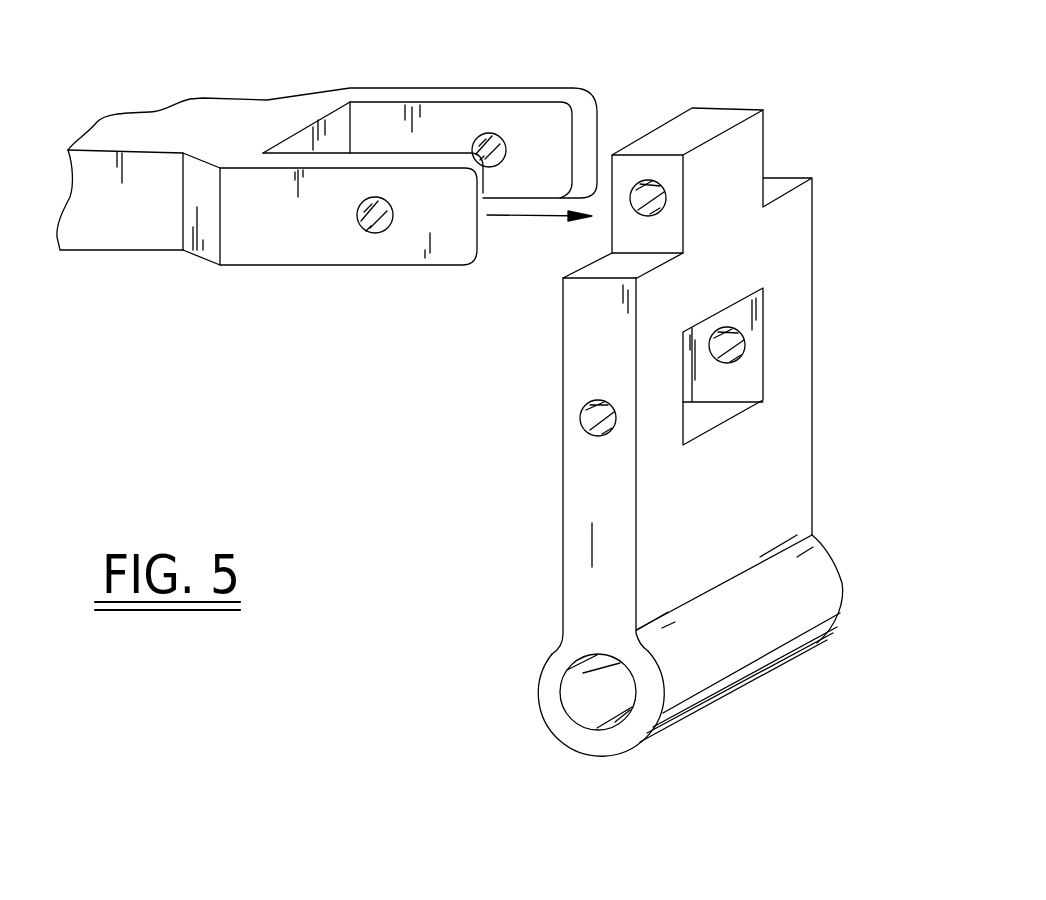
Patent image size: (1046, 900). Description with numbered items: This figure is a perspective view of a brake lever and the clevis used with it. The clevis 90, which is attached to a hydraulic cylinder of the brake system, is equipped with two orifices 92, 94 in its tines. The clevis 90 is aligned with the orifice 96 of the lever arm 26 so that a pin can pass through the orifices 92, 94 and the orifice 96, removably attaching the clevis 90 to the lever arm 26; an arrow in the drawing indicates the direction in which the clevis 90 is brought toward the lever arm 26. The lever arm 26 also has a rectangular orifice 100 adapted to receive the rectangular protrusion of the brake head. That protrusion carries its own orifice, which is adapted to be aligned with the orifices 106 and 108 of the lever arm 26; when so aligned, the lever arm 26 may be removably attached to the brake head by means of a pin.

The brake lever 26 is at (838, 521).
The clevis 90 is at (502, 92).
The orifice 92 is at (380, 233).
The orifice 94 is at (501, 154).
The orifice 96 is at (632, 208).
The rectangular orifice 100 is at (742, 380).
The orifice 106 is at (590, 418).
The orifice 108 is at (740, 350).